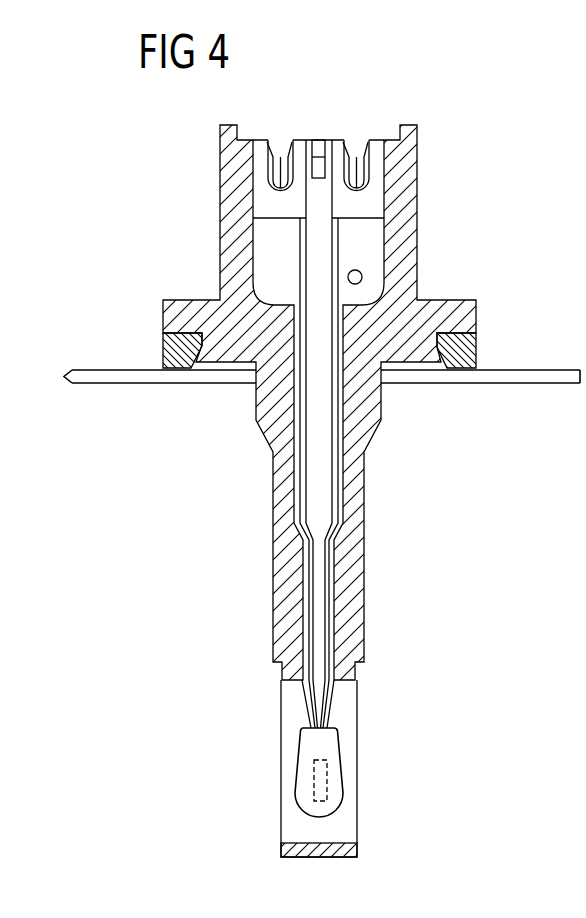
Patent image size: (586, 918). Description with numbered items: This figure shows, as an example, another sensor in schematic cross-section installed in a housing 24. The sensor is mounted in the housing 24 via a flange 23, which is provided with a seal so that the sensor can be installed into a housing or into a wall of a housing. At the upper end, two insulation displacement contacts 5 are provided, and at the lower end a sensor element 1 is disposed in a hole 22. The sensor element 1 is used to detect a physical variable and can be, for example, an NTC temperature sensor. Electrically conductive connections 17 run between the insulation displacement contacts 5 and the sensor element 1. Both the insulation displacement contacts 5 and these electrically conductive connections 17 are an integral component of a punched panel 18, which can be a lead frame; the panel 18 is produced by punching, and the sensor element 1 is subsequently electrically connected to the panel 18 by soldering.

The sensor element 1 is at (322, 788).
The insulation displacement contacts 5 is at (352, 119).
The electrically conductive connections 17 is at (299, 484).
The punched panel 18 is at (376, 242).
The hole 22 is at (292, 748).
The flange 23 is at (470, 312).
The housing 24 is at (135, 377).